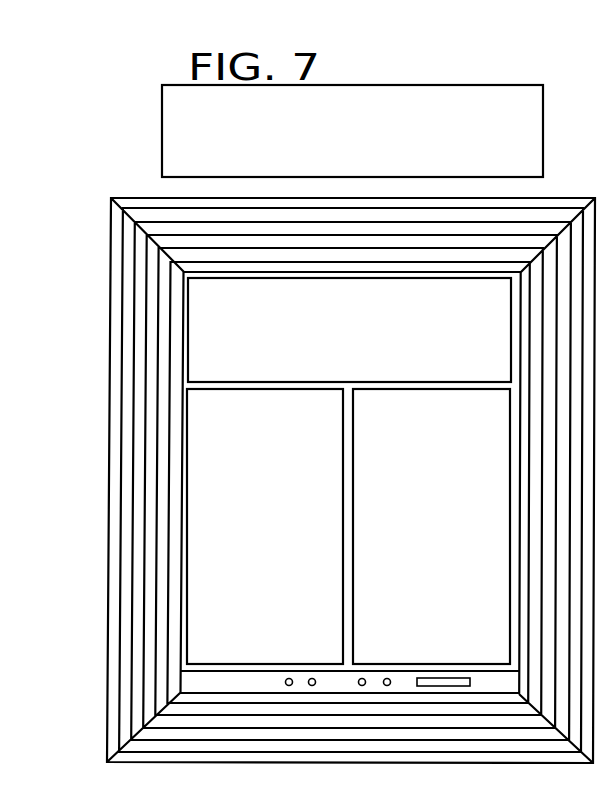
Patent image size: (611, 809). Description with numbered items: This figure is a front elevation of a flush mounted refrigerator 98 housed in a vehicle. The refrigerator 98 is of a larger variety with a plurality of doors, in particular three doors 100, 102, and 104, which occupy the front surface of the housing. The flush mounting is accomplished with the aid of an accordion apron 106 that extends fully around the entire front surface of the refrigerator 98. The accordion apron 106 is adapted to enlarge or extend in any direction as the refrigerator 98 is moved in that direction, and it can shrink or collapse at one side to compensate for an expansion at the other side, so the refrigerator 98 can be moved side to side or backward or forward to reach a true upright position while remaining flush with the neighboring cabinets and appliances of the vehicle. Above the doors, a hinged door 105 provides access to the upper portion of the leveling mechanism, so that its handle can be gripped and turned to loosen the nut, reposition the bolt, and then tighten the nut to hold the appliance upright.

The refrigerator 98 is at (201, 763).
The door 100 is at (288, 483).
The door 102 is at (440, 482).
The door 104 is at (360, 334).
The hinged door 105 is at (360, 136).
The accordion apron 106 is at (380, 633).